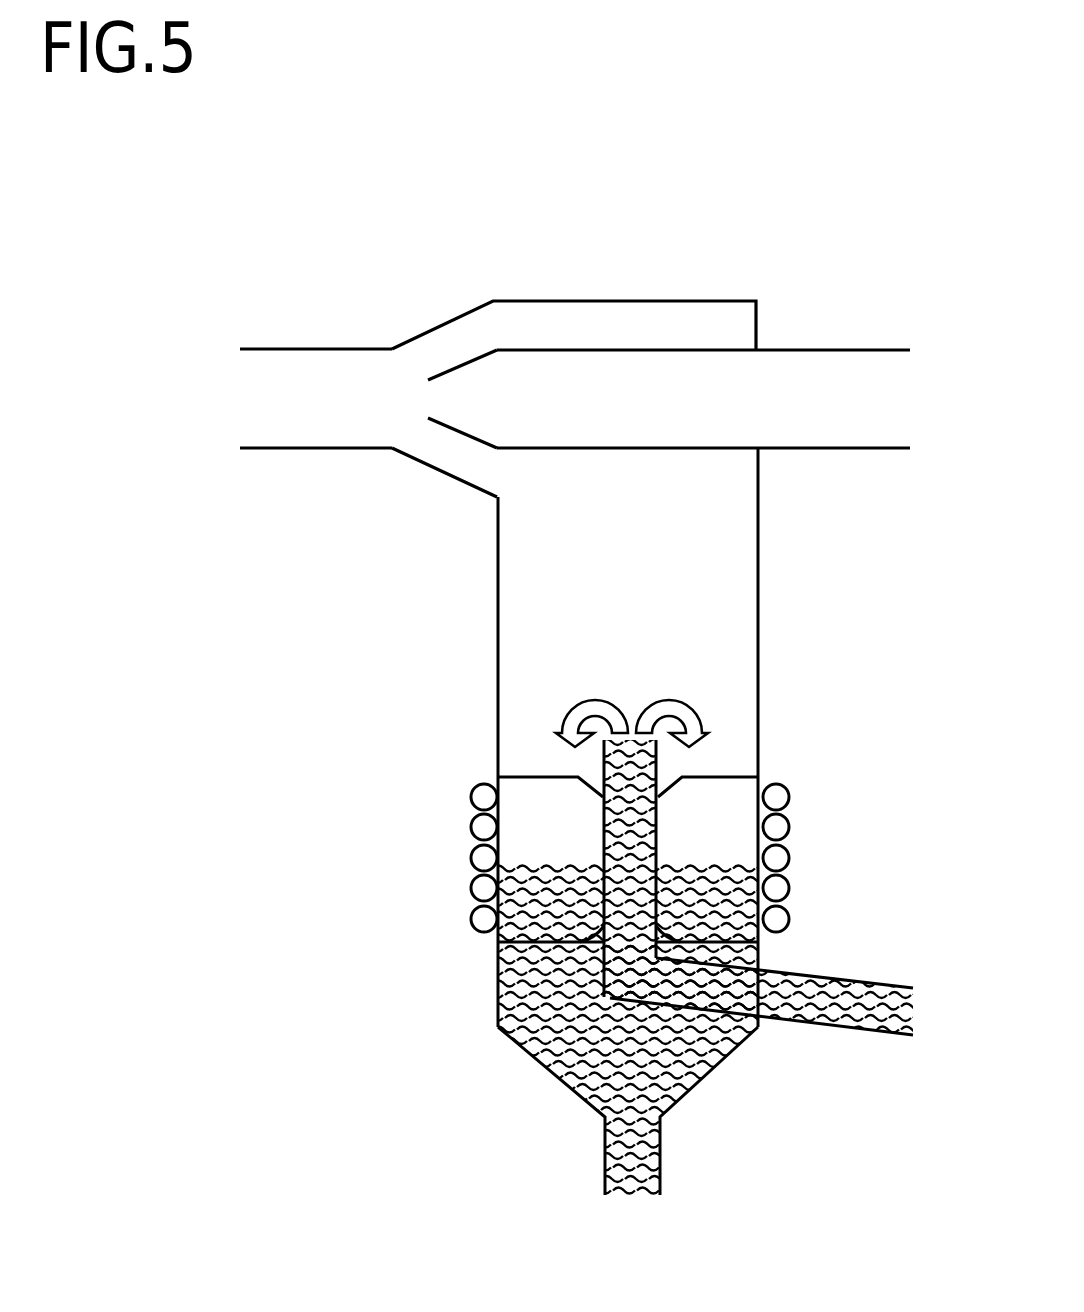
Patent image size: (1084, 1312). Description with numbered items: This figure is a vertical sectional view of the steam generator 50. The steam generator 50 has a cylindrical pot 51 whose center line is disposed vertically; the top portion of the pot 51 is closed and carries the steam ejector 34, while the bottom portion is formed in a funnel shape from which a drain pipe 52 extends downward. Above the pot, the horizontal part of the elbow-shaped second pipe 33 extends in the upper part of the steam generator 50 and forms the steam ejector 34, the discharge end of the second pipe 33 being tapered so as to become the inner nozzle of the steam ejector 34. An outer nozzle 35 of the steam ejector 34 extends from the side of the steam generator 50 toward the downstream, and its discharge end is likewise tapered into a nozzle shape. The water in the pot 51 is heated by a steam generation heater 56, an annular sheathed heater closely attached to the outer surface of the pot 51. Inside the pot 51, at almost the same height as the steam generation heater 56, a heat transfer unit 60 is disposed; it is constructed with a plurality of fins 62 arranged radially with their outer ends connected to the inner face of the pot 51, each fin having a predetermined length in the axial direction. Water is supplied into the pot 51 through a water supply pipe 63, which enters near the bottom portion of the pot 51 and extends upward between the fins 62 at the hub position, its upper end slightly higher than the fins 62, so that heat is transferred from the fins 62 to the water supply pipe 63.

The second pipe 33 is at (818, 350).
The steam ejector 34 is at (450, 318).
The outer nozzle 35 is at (298, 349).
The steam generator 50 is at (606, 821).
The pot 51 is at (498, 713).
The drain pipe 52 is at (607, 1155).
The steam generation heater 56 is at (472, 855).
The heat transfer unit 60 is at (722, 735).
The fins 62 is at (698, 824).
The water supply pipe 63 is at (830, 976).